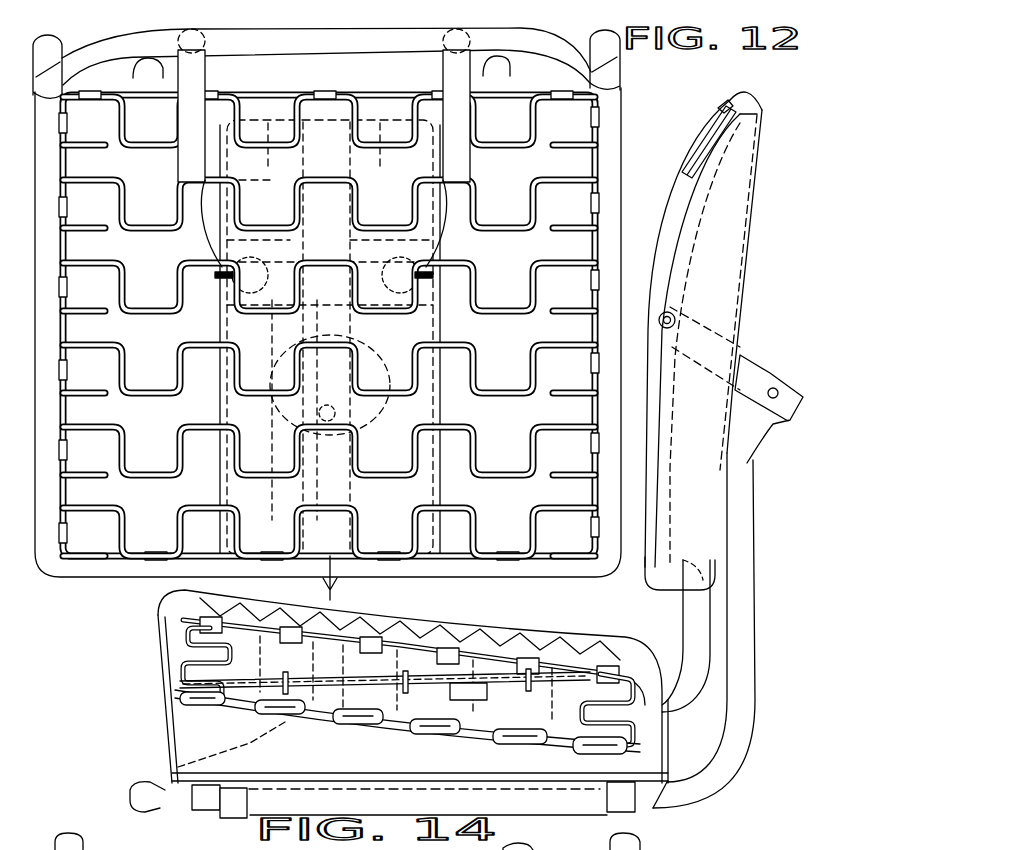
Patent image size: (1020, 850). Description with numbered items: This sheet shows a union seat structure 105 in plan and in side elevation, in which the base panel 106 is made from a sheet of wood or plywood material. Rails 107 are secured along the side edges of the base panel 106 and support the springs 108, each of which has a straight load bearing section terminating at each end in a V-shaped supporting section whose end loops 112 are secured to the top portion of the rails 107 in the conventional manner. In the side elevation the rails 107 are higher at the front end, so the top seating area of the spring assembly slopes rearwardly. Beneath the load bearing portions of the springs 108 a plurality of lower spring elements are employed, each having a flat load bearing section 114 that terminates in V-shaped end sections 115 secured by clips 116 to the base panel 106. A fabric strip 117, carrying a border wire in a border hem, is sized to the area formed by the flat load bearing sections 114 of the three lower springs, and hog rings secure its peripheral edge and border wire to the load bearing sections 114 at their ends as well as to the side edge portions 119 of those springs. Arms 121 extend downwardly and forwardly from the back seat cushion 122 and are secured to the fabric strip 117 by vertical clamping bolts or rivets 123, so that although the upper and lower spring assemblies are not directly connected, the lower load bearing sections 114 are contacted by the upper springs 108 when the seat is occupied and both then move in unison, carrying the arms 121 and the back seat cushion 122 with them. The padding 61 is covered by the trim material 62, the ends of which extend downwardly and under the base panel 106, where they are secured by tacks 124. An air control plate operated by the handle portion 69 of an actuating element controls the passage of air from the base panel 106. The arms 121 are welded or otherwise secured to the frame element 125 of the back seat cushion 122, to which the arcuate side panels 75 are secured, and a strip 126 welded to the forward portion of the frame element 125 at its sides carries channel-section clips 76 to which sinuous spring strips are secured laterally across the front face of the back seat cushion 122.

In FIG. 12, the union seat structure 105 is at (297, 58).
In FIG. 14, the union seat structure 105 is at (165, 847).
In FIG. 12, the arms 121 is at (445, 61).
In FIG. 12, the vertical clamping bolts or rivets 123 is at (215, 256).
In FIG. 14, the vertical clamping bolts or rivets 123 is at (473, 673).
In FIG. 12, the fabric strip 117 is at (445, 293).
In FIG. 12, the springs 108 is at (486, 353).
In FIG. 12, the arcuate side panels 75 is at (720, 291).
In FIG. 12, the clips 76 is at (718, 110).
In FIG. 12, the strip 126 is at (685, 156).
In FIG. 12, the back seat cushion 122 is at (645, 570).
In FIG. 12, the frame element 125 is at (645, 595).
In FIG. 12, the tacks 124 is at (652, 814).
In FIG. 14, the padding 61 is at (377, 615).
In FIG. 14, the trim material 62 is at (440, 618).
In FIG. 14, the clips 116 is at (228, 756).
In FIG. 14, the V-shaped end sections 115 is at (280, 750).
In FIG. 14, the rails 107 is at (393, 743).
In FIG. 14, the side edge portions 119 is at (383, 720).
In FIG. 14, the end loops 112 is at (497, 737).
In FIG. 14, the flat load bearing section 114 is at (415, 697).
In FIG. 14, the base panel 106 is at (520, 775).
In FIG. 14, the handle portion 69 is at (133, 783).